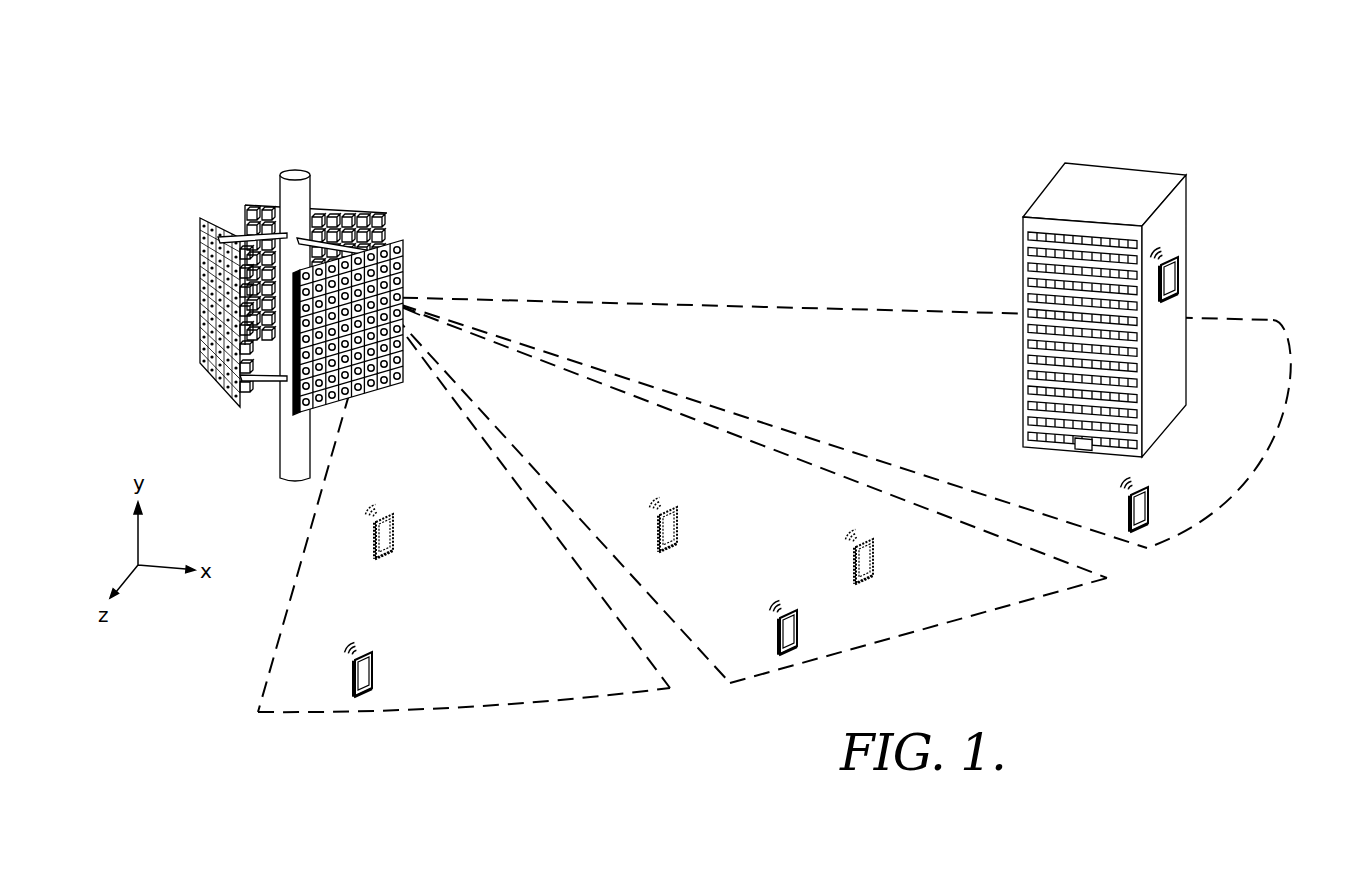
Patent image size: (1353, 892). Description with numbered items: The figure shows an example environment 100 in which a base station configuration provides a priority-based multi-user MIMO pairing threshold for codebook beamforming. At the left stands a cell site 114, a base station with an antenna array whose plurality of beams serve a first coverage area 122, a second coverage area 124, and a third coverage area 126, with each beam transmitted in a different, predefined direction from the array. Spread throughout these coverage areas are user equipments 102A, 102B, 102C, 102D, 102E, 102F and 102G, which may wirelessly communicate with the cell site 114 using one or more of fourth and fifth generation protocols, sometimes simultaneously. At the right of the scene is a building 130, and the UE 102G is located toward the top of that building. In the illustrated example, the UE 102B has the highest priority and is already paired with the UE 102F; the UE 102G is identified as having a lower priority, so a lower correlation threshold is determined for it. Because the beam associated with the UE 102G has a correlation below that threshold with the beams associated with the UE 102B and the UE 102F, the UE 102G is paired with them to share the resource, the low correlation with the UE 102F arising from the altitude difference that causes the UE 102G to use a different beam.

The example environment 100 is at (667, 143).
The cell site 114 is at (310, 160).
The building 130 is at (1141, 170).
The first coverage area 122 is at (419, 463).
The second coverage area 124 is at (568, 430).
The third coverage area 126 is at (683, 354).
The UE 102A is at (372, 674).
The UE 102B is at (393, 534).
The UE 102C is at (797, 631).
The UE 102D is at (677, 528).
The UE 102E is at (873, 557).
The UE 102F is at (1148, 510).
The UE 102G is at (1178, 276).